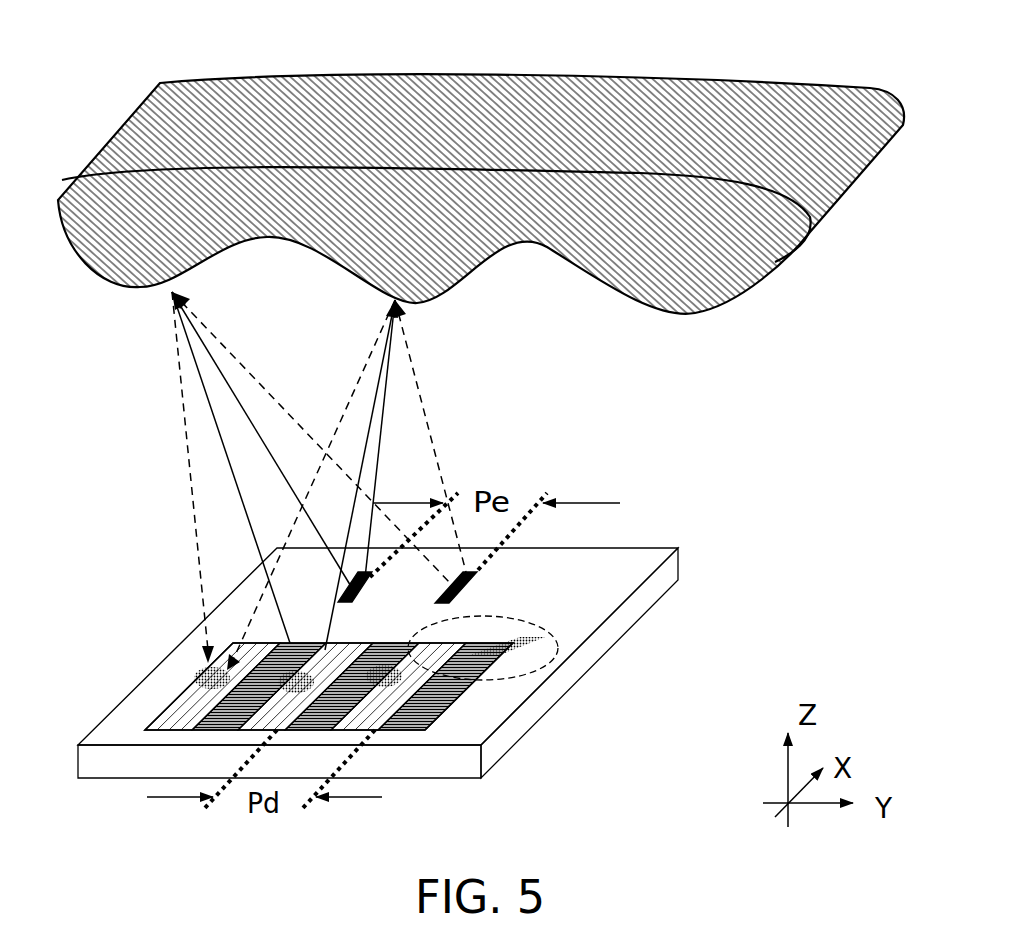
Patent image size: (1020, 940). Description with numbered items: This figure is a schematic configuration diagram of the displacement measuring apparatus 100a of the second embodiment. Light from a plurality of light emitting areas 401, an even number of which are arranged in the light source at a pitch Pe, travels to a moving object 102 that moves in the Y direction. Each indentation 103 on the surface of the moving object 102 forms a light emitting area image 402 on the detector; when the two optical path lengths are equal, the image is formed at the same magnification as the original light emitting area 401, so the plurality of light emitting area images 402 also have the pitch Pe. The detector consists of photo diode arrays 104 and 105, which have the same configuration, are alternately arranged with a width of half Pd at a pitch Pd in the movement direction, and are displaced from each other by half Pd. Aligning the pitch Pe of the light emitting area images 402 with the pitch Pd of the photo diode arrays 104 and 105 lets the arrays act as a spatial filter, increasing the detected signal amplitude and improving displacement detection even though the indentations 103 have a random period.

The displacement measuring apparatus 100a is at (795, 431).
The moving object 102 is at (690, 268).
The indentation 103 is at (297, 237).
The photo diode array 104 is at (378, 708).
The photo diode array 105 is at (477, 670).
The light emitting area 401 is at (373, 573).
The light emitting area image 402 is at (558, 648).